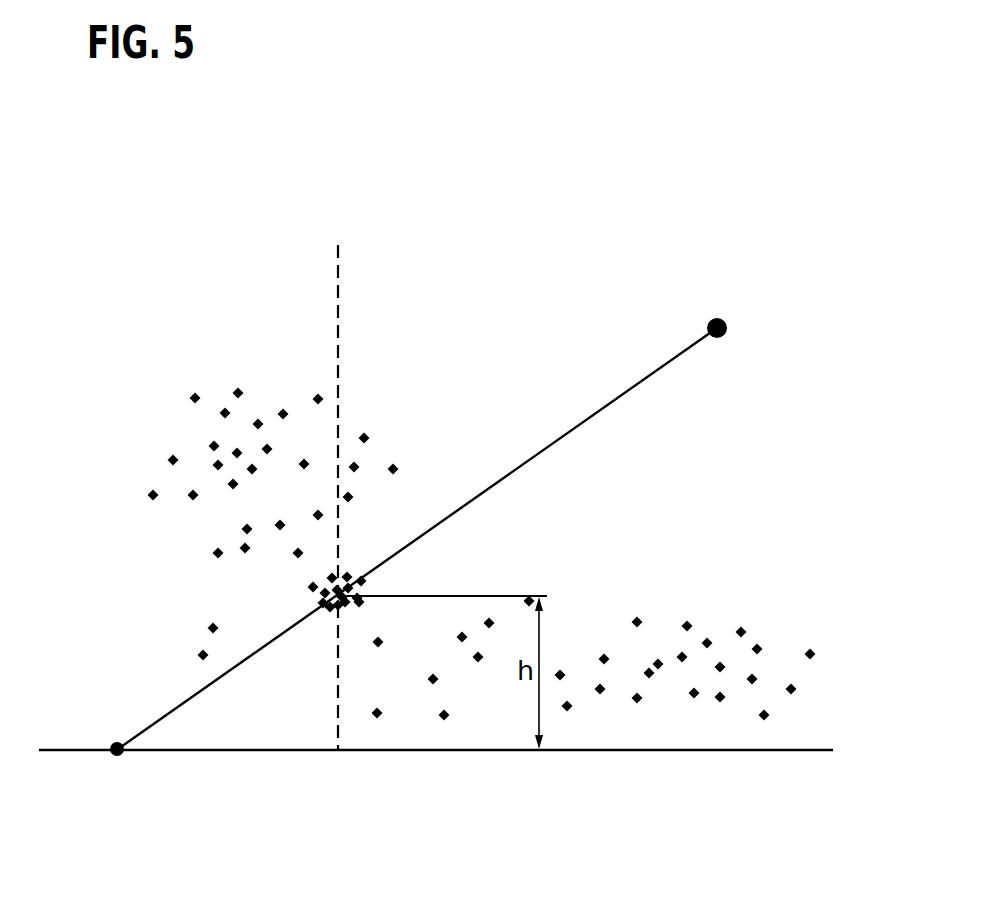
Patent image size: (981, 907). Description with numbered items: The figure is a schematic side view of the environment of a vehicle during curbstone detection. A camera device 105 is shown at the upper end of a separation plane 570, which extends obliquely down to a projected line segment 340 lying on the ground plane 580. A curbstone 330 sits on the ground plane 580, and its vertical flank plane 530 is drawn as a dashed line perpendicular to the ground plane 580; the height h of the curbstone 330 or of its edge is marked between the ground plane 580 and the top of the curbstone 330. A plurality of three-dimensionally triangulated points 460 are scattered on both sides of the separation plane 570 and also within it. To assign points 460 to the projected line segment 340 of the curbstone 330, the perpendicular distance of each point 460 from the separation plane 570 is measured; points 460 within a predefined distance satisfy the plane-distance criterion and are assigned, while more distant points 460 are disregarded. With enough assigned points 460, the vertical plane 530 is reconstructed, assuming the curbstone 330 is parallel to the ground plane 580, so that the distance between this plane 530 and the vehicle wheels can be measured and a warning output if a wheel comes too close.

The camera device 105 is at (725, 315).
The curbstone 330 is at (322, 595).
The projected line segment 340 is at (117, 756).
The three-dimensionally triangulated points 460 is at (122, 412).
The plane of curbstone 530 is at (335, 712).
The separation plane 570 is at (565, 432).
The ground plane 580 is at (660, 752).